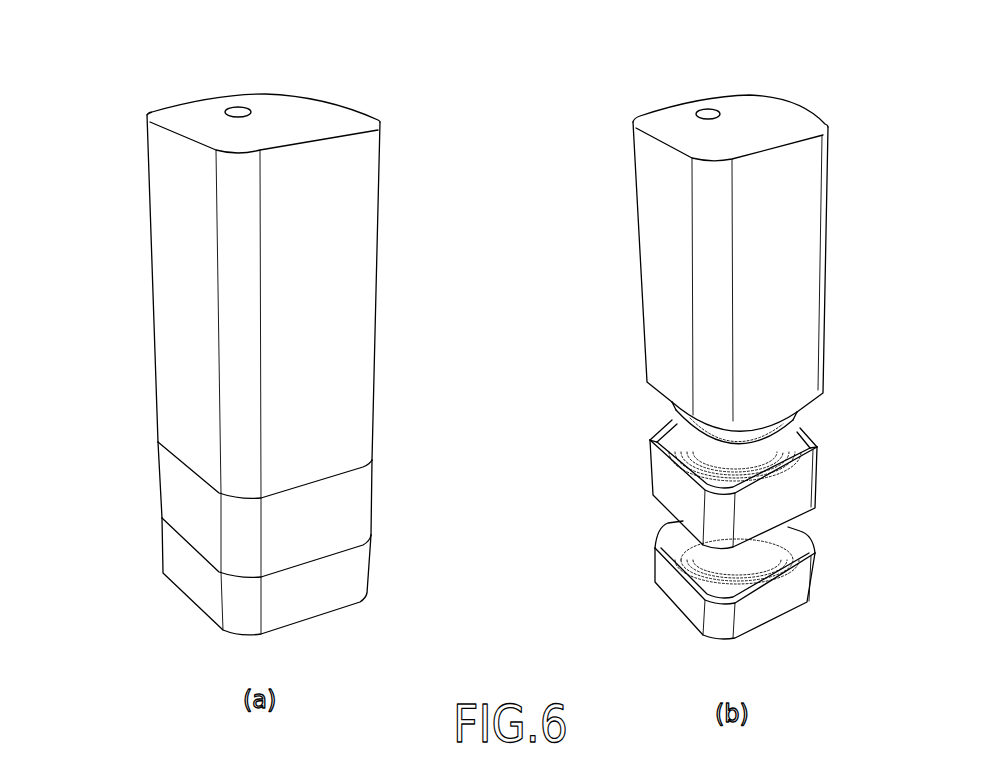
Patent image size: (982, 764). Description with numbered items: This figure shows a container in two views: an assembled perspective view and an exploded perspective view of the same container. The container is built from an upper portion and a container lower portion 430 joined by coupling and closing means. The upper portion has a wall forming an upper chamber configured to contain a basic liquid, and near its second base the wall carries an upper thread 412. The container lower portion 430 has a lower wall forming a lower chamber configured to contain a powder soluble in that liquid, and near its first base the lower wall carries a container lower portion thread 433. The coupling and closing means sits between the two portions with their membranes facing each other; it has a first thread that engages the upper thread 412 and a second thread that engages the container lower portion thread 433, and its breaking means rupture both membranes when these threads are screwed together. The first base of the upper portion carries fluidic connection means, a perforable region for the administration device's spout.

The upper thread 412 is at (797, 417).
The container lower portion 430 is at (270, 548).
The container lower portion thread 433 is at (805, 565).